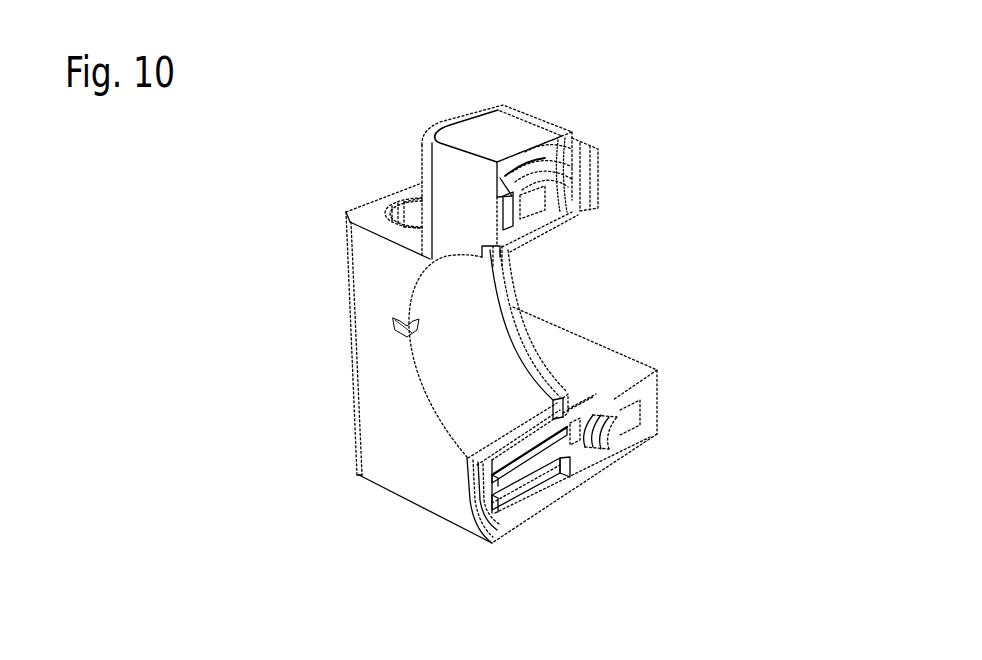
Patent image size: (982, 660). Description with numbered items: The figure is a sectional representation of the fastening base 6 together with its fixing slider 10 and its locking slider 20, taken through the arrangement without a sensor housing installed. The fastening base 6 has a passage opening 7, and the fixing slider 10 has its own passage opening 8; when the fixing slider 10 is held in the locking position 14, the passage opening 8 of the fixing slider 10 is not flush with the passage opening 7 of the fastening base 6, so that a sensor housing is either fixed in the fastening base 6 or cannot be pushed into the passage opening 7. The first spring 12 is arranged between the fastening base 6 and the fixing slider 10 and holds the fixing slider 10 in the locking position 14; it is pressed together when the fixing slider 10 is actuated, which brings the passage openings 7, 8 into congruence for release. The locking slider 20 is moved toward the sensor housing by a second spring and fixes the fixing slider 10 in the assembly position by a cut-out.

The locking position 14 is at (542, 324).
The first spring 12 is at (548, 183).
The passage opening 8 is at (500, 320).
The fixing slider 10 is at (534, 374).
The passage opening 7 is at (453, 383).
The locking slider 20 is at (508, 428).
The fastening base 6 is at (592, 387).